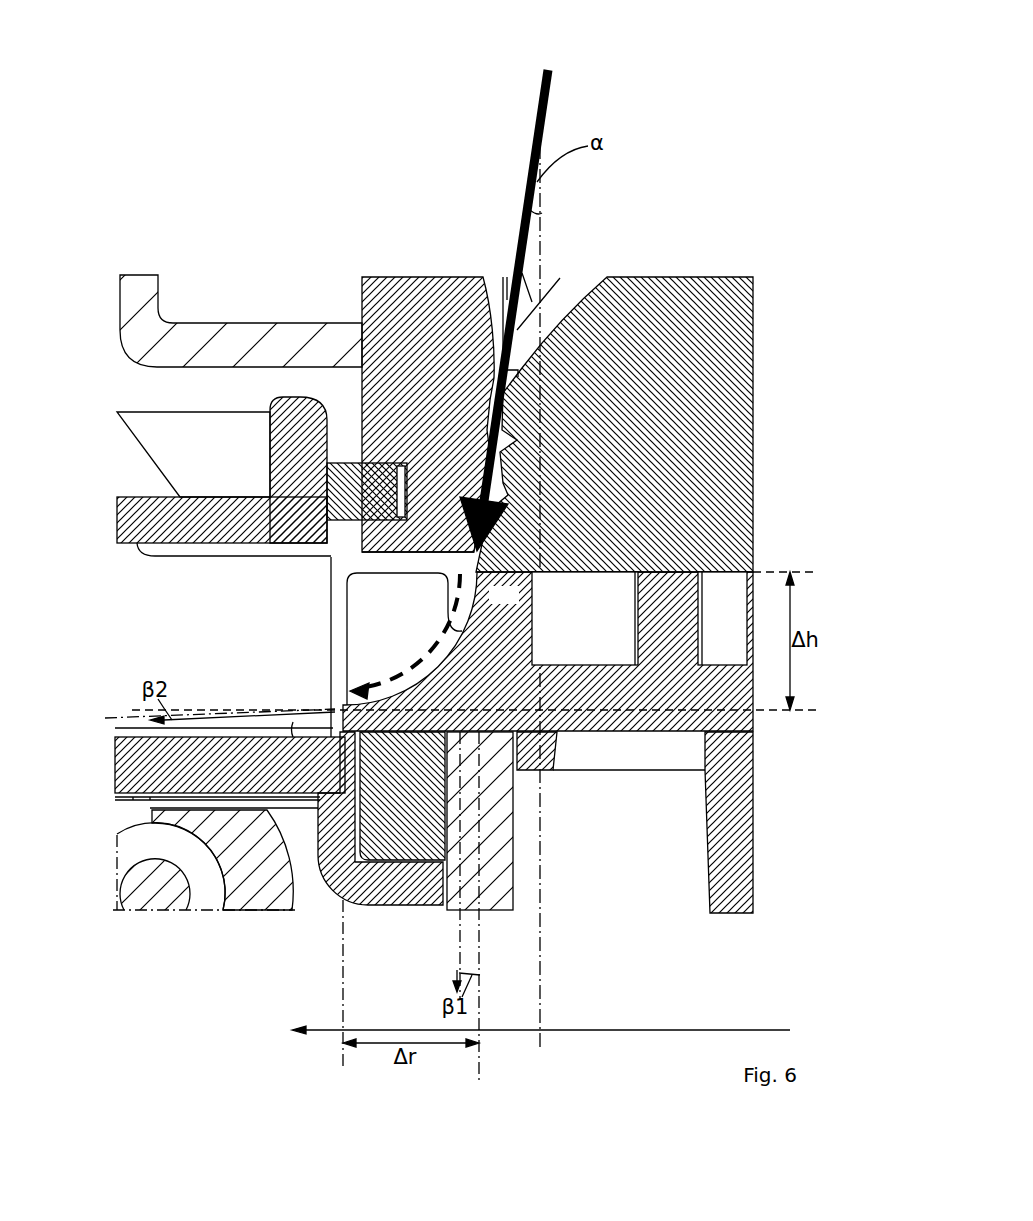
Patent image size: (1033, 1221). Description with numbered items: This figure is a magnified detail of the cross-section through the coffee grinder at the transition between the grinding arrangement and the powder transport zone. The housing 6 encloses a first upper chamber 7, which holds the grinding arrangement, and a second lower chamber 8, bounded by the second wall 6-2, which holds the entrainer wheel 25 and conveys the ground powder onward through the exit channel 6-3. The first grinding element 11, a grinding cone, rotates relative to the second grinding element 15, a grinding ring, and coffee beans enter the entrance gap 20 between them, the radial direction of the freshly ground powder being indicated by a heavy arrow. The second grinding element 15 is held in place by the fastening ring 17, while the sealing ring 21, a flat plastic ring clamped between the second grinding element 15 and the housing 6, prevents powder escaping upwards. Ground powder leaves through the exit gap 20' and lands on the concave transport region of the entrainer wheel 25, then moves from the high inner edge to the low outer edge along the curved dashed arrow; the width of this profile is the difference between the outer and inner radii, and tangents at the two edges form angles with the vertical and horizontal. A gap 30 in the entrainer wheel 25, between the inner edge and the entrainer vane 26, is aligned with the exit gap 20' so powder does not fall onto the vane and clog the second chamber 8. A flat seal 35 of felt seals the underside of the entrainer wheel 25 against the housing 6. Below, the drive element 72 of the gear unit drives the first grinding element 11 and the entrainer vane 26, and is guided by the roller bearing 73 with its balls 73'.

The housing 6 is at (112, 480).
The second wall 6-2 is at (300, 397).
The exit channel 6-3 is at (147, 641).
The first upper chamber 7 is at (147, 386).
The second lower chamber 8 is at (344, 562).
The first grinding element 11 is at (750, 278).
The second grinding element 15 is at (430, 277).
The fastening ring 17 is at (172, 283).
The entrance gap 20 is at (554, 281).
The exit gap 20' is at (376, 570).
The sealing ring 21 is at (360, 483).
The entrainer wheel 25 is at (710, 903).
The entrainer vane 26 is at (360, 632).
The gap 30 is at (446, 589).
The flat seal 35 is at (397, 850).
The drive element 72 is at (498, 907).
The roller bearing 73 is at (204, 901).
The balls 73' is at (169, 910).